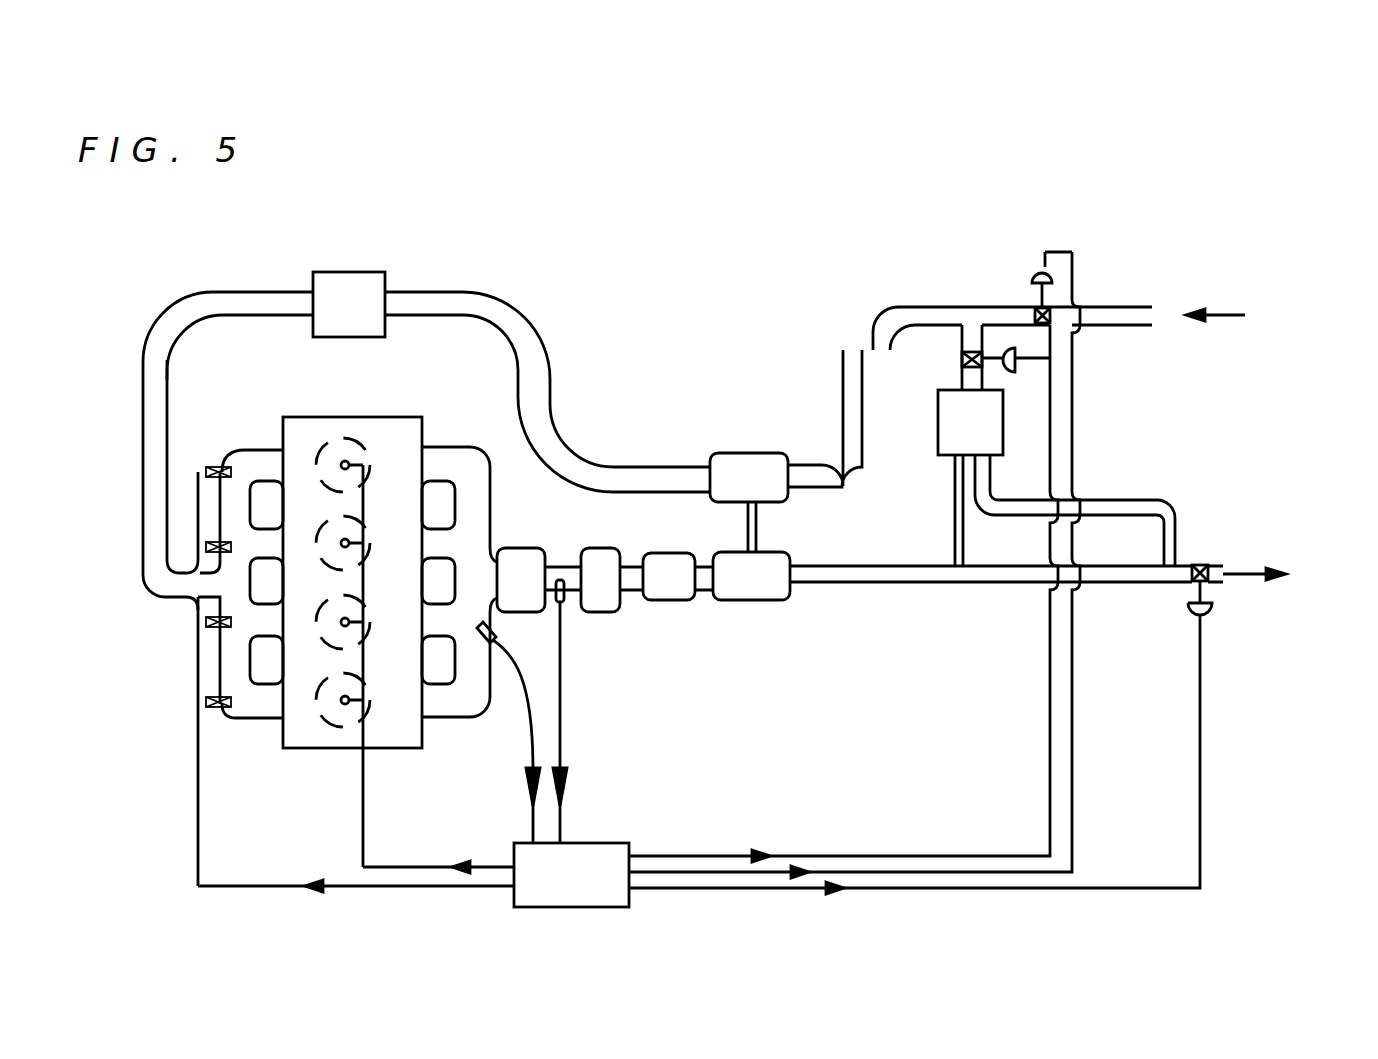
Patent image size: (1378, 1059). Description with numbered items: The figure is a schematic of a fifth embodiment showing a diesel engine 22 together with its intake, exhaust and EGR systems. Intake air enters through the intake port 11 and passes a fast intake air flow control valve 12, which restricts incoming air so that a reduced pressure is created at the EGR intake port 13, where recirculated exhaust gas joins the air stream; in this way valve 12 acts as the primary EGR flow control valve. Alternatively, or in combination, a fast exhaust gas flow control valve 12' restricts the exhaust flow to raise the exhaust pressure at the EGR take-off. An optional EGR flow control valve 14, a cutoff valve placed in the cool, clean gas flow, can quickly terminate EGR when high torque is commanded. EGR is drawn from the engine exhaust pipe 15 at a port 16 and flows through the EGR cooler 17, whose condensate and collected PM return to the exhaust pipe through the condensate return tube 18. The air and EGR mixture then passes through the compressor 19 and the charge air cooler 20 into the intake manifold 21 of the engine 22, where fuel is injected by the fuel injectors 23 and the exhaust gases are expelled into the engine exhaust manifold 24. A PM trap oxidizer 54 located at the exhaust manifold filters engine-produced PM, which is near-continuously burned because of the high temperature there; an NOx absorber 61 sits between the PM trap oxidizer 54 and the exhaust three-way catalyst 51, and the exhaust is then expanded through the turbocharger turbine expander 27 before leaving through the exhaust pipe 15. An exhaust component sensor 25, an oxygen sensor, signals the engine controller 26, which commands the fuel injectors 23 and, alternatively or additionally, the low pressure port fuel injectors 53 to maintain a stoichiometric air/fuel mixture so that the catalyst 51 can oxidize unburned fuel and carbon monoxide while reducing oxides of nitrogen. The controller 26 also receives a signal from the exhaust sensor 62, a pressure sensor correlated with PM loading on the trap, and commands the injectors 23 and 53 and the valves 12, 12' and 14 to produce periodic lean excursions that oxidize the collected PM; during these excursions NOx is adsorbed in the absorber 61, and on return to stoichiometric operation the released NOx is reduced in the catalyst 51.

The intake port 11 is at (1160, 322).
The fast intake air flow control valve 12 is at (1005, 273).
The fast exhaust gas flow control valve 12' is at (946, 738).
The EGR intake port 13 is at (975, 330).
The EGR flow control valve 14 is at (1003, 370).
The engine exhaust pipe 15 is at (1110, 582).
The port 16 is at (1180, 568).
The EGR cooler 17 is at (948, 426).
The condensate return tube 18 is at (953, 537).
The compressor 19 is at (750, 464).
The charge air cooler 20 is at (350, 278).
The intake manifold 21 is at (243, 466).
The engine 22 is at (333, 745).
The fuel injectors 23 is at (347, 697).
The engine exhaust manifold 24 is at (470, 468).
The exhaust component sensor 25 is at (563, 603).
The engine controller 26 is at (570, 852).
The turbocharger turbine expander 27 is at (752, 595).
The exhaust 3-way catalyst 51 is at (657, 578).
The low pressure port fuel injectors 53 is at (225, 708).
The PM trap oxidizer 54 is at (517, 556).
The NOx absorber 61 is at (606, 594).
The exhaust sensor 62 is at (490, 648).